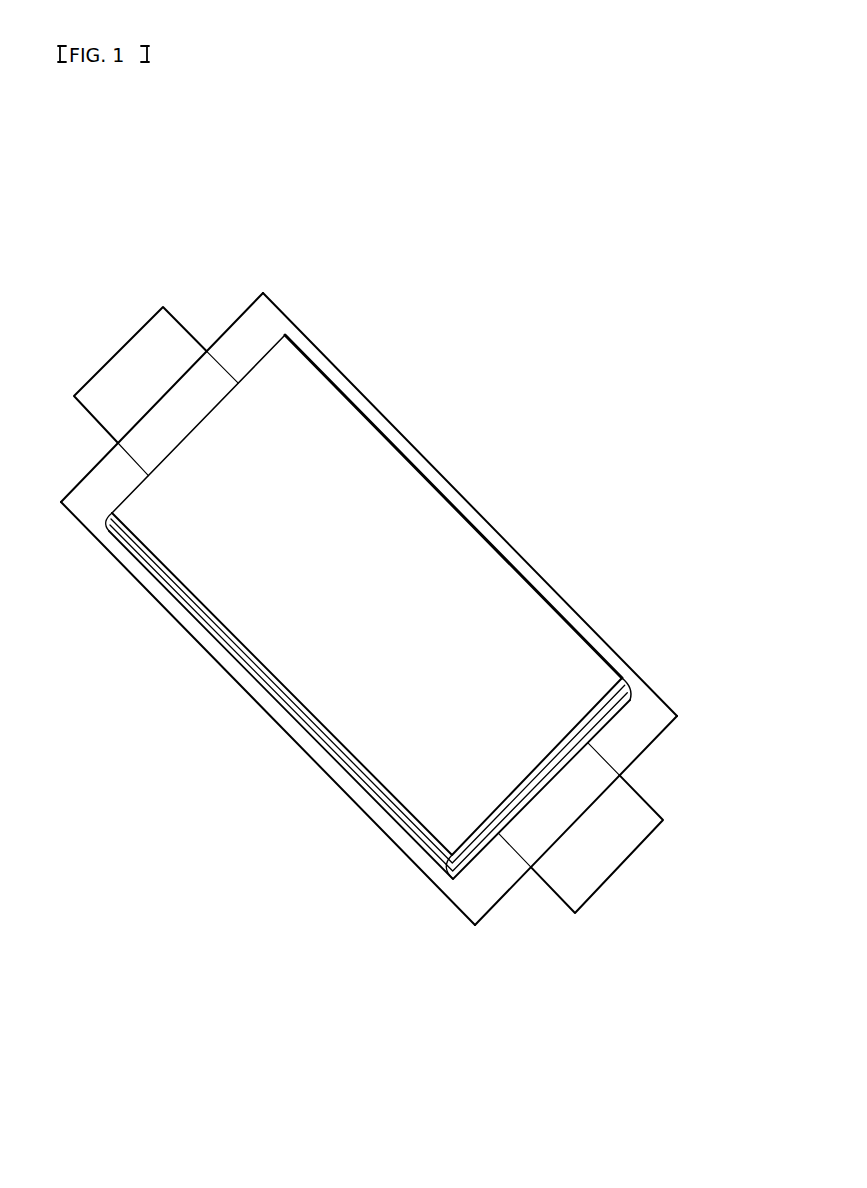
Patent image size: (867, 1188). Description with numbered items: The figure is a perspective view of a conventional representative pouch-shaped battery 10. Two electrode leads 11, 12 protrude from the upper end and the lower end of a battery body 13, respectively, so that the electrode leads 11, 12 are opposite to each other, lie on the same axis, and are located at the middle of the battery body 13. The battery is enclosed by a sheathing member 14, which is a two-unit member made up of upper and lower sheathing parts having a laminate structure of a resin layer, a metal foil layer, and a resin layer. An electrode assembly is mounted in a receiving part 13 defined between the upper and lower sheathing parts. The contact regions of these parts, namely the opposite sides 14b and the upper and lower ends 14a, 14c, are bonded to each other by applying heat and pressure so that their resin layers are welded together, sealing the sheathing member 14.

The pouch-shaped battery 10 is at (97, 168).
The electrode lead 11 is at (136, 358).
The electrode lead 12 is at (622, 865).
The battery body 13 is at (448, 522).
The sheathing member 14 is at (662, 698).
The upper end 14a is at (263, 318).
The opposite sides 14b is at (365, 803).
The lower end 14c is at (487, 887).